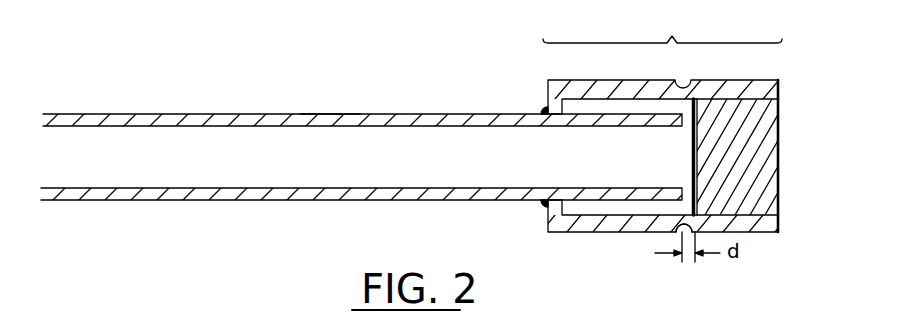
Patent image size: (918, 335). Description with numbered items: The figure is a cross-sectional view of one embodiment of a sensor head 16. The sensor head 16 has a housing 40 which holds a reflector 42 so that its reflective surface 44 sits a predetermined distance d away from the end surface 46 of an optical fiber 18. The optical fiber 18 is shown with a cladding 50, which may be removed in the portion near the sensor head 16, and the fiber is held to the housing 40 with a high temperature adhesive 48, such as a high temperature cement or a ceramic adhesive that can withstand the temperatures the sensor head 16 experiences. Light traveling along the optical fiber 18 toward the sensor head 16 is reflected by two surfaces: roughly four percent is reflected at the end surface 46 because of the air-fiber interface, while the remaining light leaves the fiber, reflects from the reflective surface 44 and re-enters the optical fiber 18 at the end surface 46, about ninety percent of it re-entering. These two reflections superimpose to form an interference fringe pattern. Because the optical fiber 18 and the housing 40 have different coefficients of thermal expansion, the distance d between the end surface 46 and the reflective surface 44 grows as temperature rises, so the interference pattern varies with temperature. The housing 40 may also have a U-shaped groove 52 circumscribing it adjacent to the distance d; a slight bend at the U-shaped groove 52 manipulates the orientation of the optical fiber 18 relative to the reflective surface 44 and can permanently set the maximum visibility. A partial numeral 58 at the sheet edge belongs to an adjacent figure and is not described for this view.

The sensor head 16 is at (662, 25).
The optical fiber 18 is at (252, 126).
The cladding 50 is at (328, 114).
The housing 40 is at (718, 80).
The reflector 42 is at (773, 162).
The reflective surface 44 is at (691, 105).
The end surface of optical fiber 46 is at (685, 168).
The high temperature adhesive 48 is at (540, 204).
The U-shaped groove 52 is at (680, 232).
The element (partial, adjacent figure) 58 is at (306, 325).